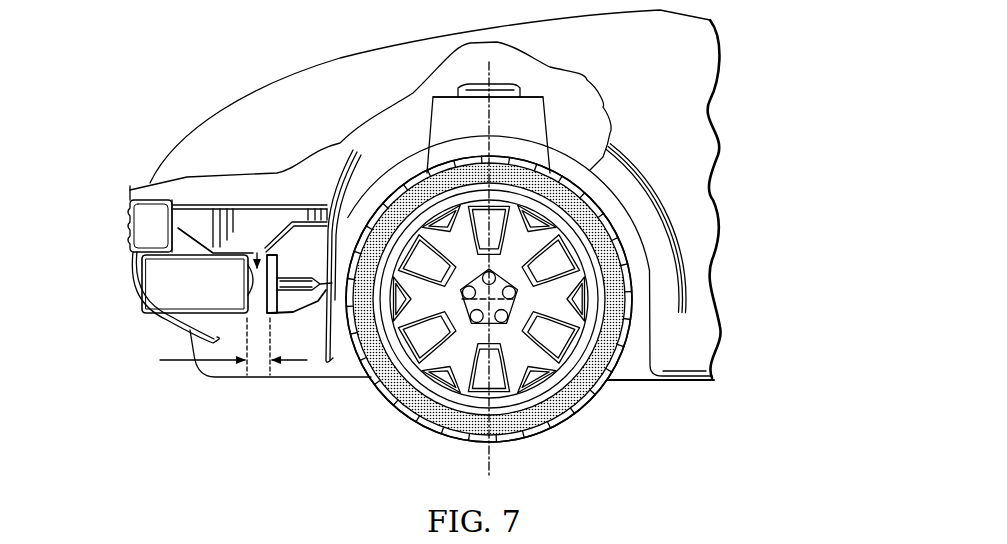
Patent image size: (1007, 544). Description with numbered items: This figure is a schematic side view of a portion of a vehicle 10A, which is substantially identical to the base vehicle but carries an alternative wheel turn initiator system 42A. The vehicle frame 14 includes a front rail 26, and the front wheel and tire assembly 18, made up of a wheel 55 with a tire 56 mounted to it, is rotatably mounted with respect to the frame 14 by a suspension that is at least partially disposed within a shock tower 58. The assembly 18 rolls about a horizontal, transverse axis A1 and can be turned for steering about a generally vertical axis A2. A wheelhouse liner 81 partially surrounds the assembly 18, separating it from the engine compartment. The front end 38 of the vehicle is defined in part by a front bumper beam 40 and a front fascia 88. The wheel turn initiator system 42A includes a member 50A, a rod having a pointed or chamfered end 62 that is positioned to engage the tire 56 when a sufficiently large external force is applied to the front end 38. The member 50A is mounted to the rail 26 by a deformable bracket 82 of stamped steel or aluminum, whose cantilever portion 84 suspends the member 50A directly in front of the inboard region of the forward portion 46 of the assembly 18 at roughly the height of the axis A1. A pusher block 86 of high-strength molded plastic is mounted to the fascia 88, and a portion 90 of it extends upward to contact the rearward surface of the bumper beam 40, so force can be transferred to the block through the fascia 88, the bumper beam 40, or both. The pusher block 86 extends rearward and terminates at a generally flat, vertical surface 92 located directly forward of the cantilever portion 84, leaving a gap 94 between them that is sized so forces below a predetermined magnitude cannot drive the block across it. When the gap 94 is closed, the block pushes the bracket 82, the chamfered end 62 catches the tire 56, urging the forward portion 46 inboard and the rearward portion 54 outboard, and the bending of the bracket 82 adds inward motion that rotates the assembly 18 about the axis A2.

The vehicle 10A is at (175, 75).
The vehicle frame 14 is at (262, 204).
The front rail 26 is at (430, 96).
The front wheel and tire assembly 18 is at (473, 443).
The front end 38 is at (125, 222).
The front bumper beam 40 is at (153, 220).
The wheel turn initiator system 42A is at (290, 322).
The forward portion 46 is at (376, 385).
The member 50A is at (385, 183).
The rearward portion 54 is at (620, 297).
The wheel 55 is at (455, 352).
The tire 56 is at (573, 403).
The shock tower 58 is at (547, 127).
The chamfered end 62 is at (404, 298).
The wheelhouse liner 81 is at (388, 184).
The deformable bracket 82 is at (310, 207).
The cantilever portion 84 is at (267, 294).
The pusher block 86 is at (180, 287).
The front fascia 88 is at (133, 293).
The portion of the pusher block 90 is at (207, 204).
The vertical surface 92 is at (140, 272).
The gap 94 is at (284, 240).
The horizontal transverse axis A1 is at (491, 302).
The generally vertical axis A2 is at (492, 63).